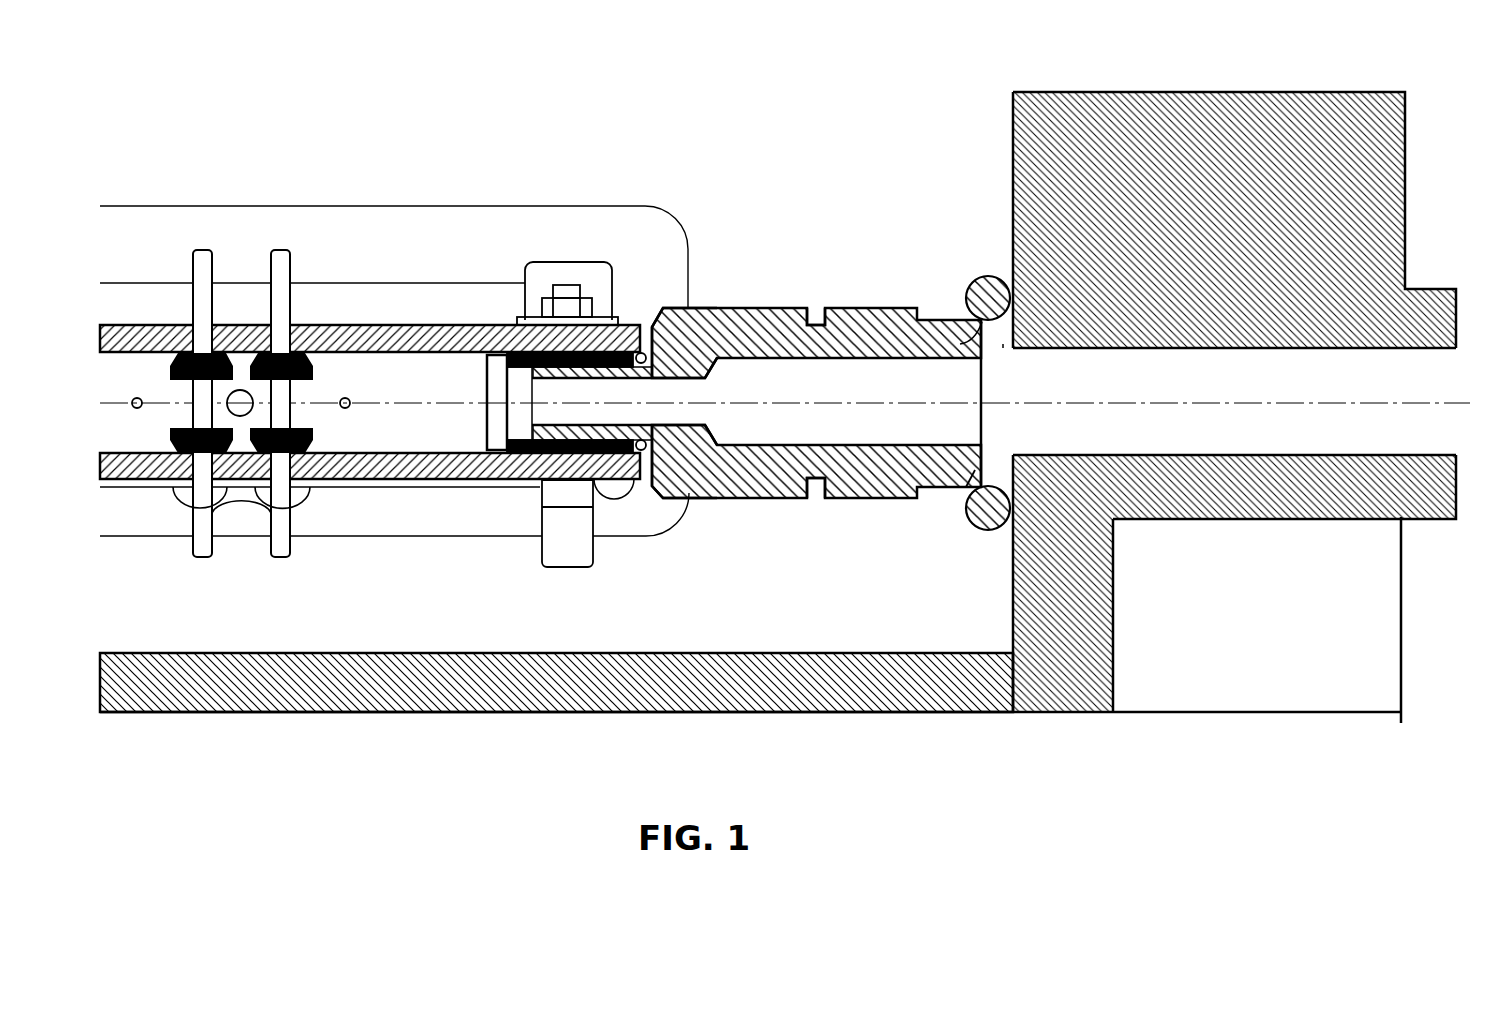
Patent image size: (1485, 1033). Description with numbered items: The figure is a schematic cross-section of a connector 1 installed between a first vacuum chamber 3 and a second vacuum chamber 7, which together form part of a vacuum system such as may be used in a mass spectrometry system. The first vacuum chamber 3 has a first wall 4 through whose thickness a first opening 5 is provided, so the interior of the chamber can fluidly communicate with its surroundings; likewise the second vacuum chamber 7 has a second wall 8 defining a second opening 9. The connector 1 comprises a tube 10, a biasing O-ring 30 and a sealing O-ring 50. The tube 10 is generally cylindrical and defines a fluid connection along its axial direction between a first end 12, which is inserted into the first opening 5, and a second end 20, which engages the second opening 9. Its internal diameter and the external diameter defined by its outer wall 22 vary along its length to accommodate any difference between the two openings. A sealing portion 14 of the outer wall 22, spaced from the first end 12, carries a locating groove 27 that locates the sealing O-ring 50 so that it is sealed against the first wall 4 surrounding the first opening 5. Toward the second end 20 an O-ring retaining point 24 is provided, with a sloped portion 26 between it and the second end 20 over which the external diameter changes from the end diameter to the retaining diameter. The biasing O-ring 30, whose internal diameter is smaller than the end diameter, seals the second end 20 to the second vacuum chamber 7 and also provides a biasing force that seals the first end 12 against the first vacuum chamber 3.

The connector 1 is at (708, 247).
The first vacuum chamber 3 is at (181, 318).
The first wall 4 is at (641, 352).
The first opening 5 is at (391, 433).
The second vacuum chamber 7 is at (1060, 110).
The second wall 8 is at (1010, 117).
The second opening 9 is at (1015, 383).
The tube 10 is at (873, 299).
The first end 12 is at (500, 408).
The sealing portion 14 is at (689, 502).
The second end 20 is at (985, 420).
The outer wall 22 is at (795, 499).
The O-ring retaining point 24 is at (969, 472).
The sloped portion 26 is at (1005, 344).
The locating groove 27 is at (817, 324).
The biasing O-ring 30 is at (978, 276).
The sealing O-ring 50 is at (645, 450).